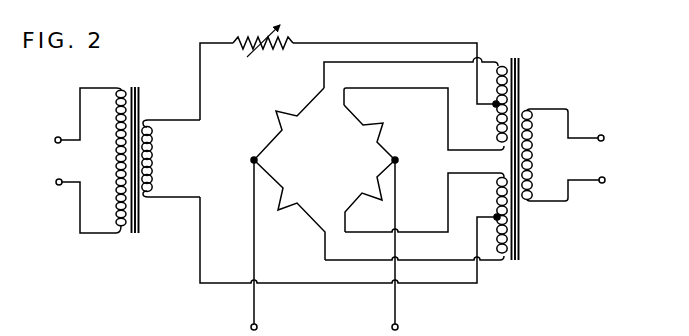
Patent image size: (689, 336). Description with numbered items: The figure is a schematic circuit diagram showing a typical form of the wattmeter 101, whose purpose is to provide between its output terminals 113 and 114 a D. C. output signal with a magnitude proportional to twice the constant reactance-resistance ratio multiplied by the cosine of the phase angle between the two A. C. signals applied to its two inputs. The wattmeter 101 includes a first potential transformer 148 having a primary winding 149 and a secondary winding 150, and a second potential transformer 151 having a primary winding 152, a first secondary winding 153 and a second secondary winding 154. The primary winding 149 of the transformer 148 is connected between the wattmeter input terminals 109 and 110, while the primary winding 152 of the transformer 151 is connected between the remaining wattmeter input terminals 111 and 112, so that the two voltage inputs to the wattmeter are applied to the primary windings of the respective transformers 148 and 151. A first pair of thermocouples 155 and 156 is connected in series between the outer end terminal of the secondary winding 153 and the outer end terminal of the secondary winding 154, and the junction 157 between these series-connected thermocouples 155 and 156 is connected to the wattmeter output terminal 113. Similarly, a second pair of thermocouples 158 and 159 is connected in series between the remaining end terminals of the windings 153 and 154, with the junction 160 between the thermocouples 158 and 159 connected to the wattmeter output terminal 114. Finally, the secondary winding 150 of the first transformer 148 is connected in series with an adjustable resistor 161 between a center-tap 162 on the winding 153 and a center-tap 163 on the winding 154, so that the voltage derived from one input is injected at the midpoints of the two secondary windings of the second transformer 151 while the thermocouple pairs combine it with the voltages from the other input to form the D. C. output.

The wattmeter 101 is at (422, 36).
The wattmeter input terminal 109 is at (57, 136).
The wattmeter input terminal 110 is at (58, 186).
The wattmeter input terminal 111 is at (602, 134).
The wattmeter input terminal 112 is at (603, 184).
The wattmeter output terminal 113 is at (251, 327).
The wattmeter output terminal 114 is at (398, 327).
The first potential transformer 148 is at (143, 236).
The primary winding 149 is at (116, 155).
The secondary winding 150 is at (152, 162).
The second potential transformer 151 is at (531, 256).
The primary winding 152 is at (533, 160).
The first secondary winding 153 is at (493, 60).
The second secondary winding 154 is at (497, 262).
The thermocouple 155 is at (277, 120).
The thermocouple 156 is at (284, 210).
The junction 157 is at (251, 160).
The thermocouple 158 is at (383, 125).
The thermocouple 159 is at (375, 200).
The junction 160 is at (398, 160).
The adjustable resistor 161 is at (253, 36).
The center-tap 162 is at (494, 107).
The center-tap 163 is at (496, 214).